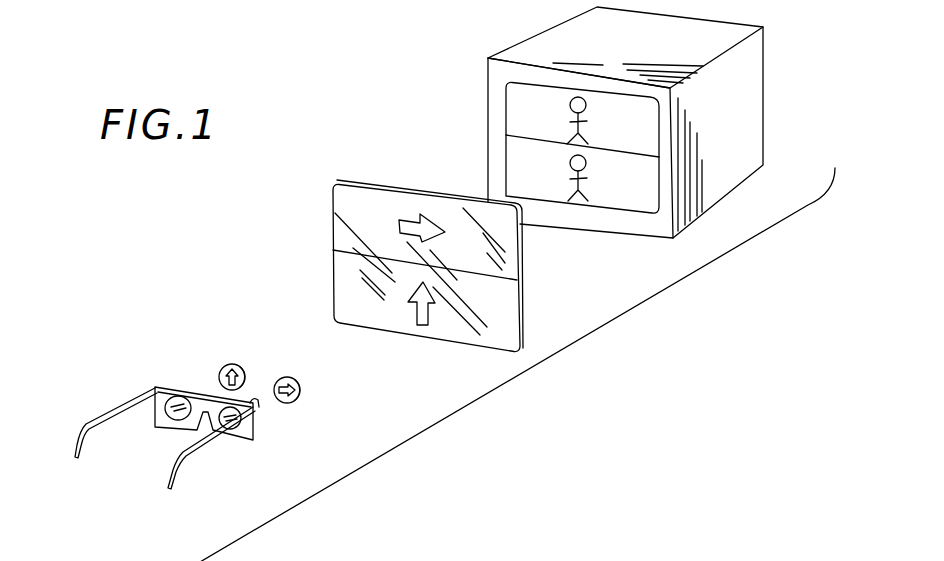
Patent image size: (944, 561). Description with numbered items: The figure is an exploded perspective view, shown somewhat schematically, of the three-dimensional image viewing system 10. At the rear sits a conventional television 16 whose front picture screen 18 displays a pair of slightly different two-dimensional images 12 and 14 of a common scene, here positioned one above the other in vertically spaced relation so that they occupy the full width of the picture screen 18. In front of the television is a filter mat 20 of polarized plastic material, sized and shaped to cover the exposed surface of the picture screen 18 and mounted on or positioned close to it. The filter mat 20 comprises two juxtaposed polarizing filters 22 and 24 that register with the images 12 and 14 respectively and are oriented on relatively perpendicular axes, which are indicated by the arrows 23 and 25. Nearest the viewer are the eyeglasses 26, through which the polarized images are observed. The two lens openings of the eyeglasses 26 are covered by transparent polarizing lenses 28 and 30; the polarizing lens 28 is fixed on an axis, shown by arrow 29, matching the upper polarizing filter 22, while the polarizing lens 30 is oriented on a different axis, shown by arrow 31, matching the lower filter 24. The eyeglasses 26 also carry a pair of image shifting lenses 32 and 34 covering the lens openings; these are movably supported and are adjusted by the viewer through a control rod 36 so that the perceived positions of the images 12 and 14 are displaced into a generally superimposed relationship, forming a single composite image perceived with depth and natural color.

The viewing system 10 is at (170, 277).
The two-dimensional image 12 is at (506, 106).
The two-dimensional image 14 is at (623, 202).
The television 16 is at (755, 93).
The picture screen 18 is at (599, 201).
The filter mat 20 is at (338, 172).
The polarizing filter 22 is at (333, 215).
The arrow 23 is at (433, 235).
The polarizing filter 24 is at (462, 336).
The arrow 25 is at (417, 312).
The eyeglasses 26 is at (136, 389).
The polarizing lens 28 is at (301, 386).
The arrow 29 is at (297, 402).
The polarizing lens 30 is at (225, 370).
The arrow 31 is at (243, 367).
The image shifting lens 32 is at (233, 433).
The image shifting lens 34 is at (175, 420).
The control rod 36 is at (257, 400).